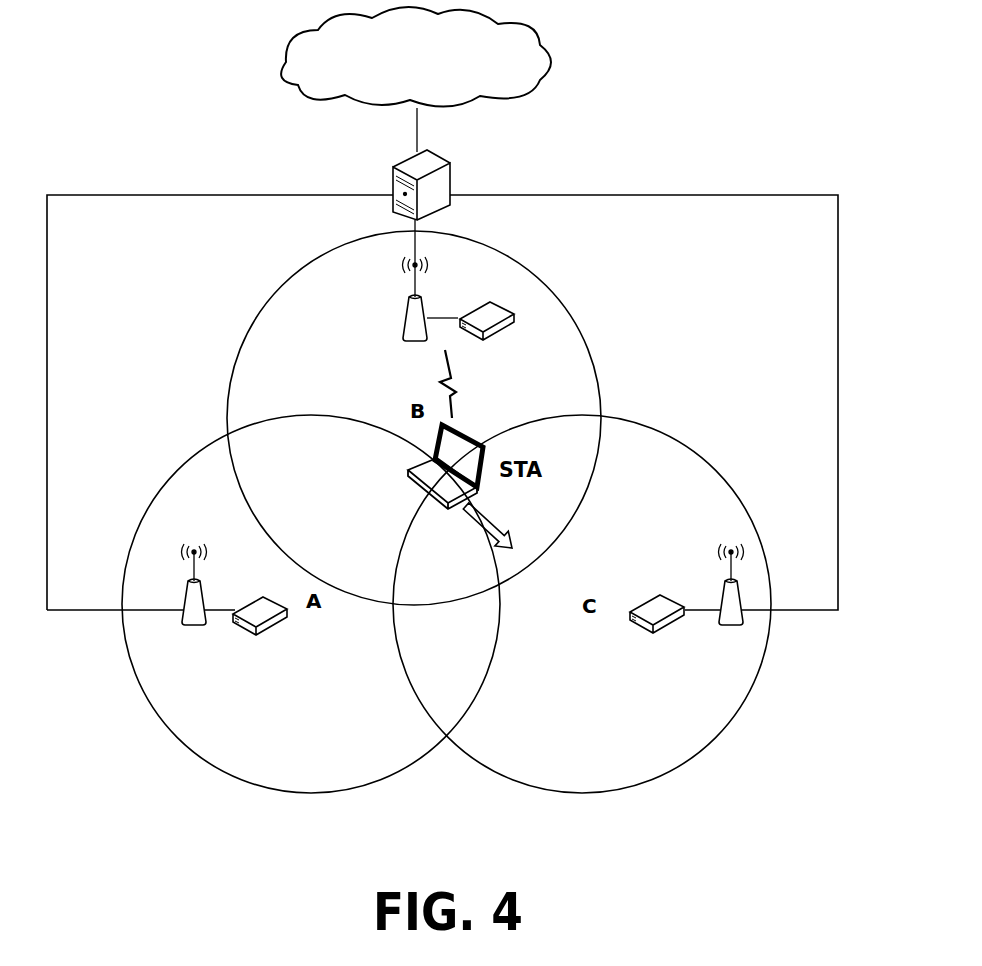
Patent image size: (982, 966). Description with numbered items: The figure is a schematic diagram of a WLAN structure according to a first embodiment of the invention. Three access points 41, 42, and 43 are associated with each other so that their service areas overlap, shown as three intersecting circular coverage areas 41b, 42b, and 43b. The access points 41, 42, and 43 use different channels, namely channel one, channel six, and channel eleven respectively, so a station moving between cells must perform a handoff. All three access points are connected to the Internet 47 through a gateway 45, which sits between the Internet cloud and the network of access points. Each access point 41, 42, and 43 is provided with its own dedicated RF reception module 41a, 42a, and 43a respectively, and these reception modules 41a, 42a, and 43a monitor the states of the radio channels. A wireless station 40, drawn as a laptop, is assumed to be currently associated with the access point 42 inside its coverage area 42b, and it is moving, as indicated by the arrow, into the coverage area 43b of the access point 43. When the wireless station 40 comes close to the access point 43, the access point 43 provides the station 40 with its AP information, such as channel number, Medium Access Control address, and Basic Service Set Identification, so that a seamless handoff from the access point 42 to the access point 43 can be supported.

The wireless station 40 is at (412, 478).
The access point 41 is at (187, 623).
The dedicated RF reception module 41a is at (290, 623).
The coverage area 41b is at (187, 745).
The access point 42 is at (427, 308).
The dedicated RF reception module 42a is at (514, 316).
The coverage area 42b is at (592, 354).
The access point 43 is at (734, 578).
The dedicated RF reception module 43a is at (658, 597).
The coverage area 43b is at (703, 462).
The gateway 45 is at (450, 172).
The Internet 47 is at (547, 45).